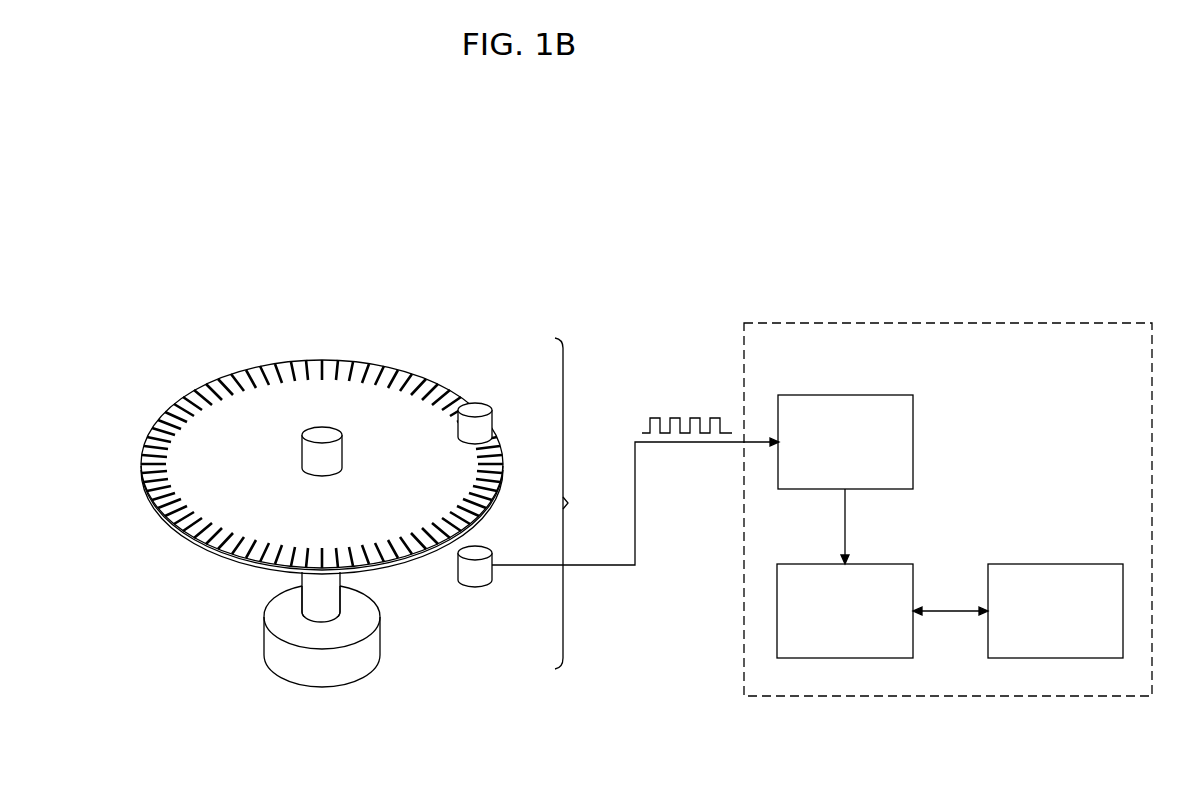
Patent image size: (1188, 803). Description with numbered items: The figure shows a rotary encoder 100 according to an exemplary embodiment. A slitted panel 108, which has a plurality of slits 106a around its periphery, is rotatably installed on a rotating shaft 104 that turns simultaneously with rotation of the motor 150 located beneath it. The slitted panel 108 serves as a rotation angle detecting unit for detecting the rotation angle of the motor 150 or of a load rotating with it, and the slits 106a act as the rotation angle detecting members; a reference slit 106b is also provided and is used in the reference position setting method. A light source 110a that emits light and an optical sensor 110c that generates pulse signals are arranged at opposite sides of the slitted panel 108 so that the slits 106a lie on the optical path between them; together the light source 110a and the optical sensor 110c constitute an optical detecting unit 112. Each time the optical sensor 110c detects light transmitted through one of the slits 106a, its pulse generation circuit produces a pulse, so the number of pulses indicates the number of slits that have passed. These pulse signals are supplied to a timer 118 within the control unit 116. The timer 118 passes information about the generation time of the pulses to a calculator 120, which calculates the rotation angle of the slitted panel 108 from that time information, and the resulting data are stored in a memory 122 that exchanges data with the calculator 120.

The rotary encoder 100 is at (661, 223).
The rotating shaft 104 is at (324, 437).
The slits 106a is at (247, 378).
The reference slit 106b is at (192, 538).
The slitted panel 108 is at (320, 455).
The light source 110a is at (478, 404).
The optical sensor 110c is at (490, 584).
The optical detecting unit 112 is at (580, 503).
The control unit 116 is at (948, 322).
The timer 118 is at (880, 394).
The calculator 120 is at (880, 563).
The memory 122 is at (1092, 563).
The motor 150 is at (270, 652).